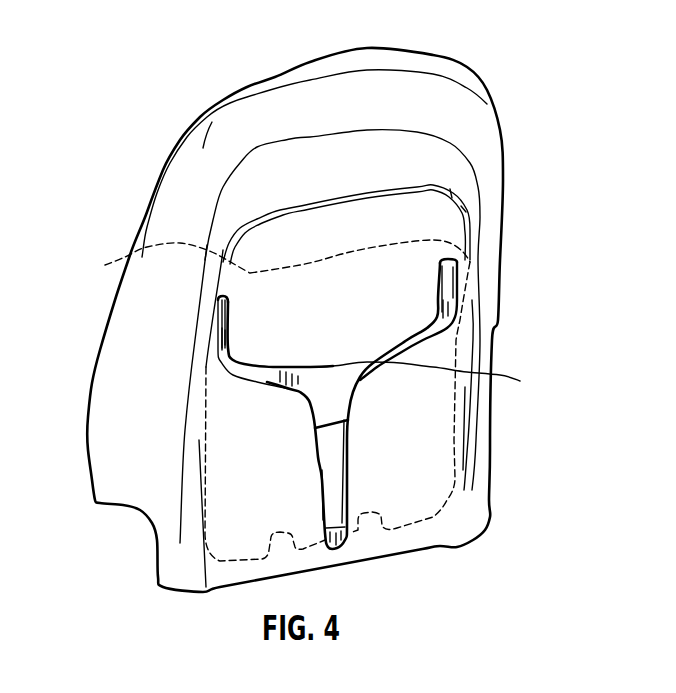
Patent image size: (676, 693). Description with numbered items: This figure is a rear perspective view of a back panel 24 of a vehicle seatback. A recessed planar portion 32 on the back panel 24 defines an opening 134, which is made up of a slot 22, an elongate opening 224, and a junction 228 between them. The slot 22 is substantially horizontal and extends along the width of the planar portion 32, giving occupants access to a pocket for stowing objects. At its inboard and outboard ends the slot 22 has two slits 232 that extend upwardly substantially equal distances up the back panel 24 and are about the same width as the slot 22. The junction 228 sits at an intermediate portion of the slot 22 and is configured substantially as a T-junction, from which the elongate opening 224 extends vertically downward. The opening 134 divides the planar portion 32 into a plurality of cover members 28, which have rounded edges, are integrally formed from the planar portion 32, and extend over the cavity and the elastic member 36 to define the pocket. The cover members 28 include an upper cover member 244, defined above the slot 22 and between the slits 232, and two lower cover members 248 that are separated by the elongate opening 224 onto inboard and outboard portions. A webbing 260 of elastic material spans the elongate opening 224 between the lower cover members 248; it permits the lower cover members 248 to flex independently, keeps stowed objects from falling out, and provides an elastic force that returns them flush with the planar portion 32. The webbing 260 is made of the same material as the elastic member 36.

The back panel 24 is at (417, 92).
The planar portion 32 is at (413, 217).
The opening 134 is at (347, 390).
The slits 232 is at (215, 352).
The elastic member 36 is at (313, 317).
The cover members 28 is at (257, 347).
The slot 22 is at (267, 373).
The lower cover members 248 is at (269, 450).
The upper cover member 244 is at (353, 329).
The junction 228 is at (320, 392).
The webbing 260 is at (337, 463).
The elongate opening 224 is at (317, 462).